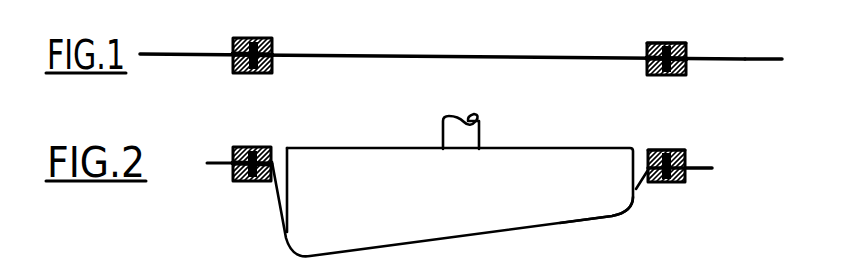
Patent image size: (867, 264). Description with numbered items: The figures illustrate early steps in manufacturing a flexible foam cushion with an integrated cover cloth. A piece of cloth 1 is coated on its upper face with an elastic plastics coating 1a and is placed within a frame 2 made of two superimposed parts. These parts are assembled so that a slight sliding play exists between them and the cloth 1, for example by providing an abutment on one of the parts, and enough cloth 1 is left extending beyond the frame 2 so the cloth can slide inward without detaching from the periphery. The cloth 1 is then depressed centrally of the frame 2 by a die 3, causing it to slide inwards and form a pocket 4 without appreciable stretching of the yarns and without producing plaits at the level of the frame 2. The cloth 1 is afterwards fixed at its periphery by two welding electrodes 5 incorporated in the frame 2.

In FIG. 1, the cloth 1 is at (733, 62).
In FIG. 1, the elastic plastics coating 1a is at (760, 56).
In FIG. 1, the frame 2 is at (688, 54).
In FIG. 2, the frame 2 is at (680, 180).
In FIG. 2, the die 3 is at (527, 170).
In FIG. 2, the pocket 4 is at (627, 211).
In FIG. 1, the welding electrodes 5 is at (665, 44).
In FIG. 2, the welding electrodes 5 is at (655, 151).